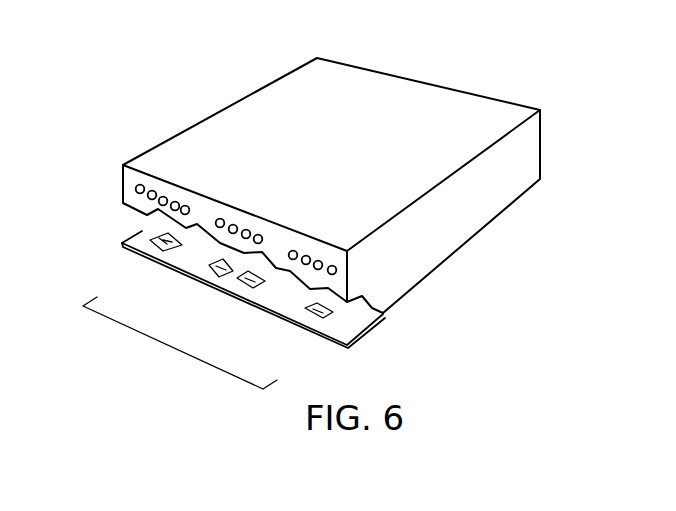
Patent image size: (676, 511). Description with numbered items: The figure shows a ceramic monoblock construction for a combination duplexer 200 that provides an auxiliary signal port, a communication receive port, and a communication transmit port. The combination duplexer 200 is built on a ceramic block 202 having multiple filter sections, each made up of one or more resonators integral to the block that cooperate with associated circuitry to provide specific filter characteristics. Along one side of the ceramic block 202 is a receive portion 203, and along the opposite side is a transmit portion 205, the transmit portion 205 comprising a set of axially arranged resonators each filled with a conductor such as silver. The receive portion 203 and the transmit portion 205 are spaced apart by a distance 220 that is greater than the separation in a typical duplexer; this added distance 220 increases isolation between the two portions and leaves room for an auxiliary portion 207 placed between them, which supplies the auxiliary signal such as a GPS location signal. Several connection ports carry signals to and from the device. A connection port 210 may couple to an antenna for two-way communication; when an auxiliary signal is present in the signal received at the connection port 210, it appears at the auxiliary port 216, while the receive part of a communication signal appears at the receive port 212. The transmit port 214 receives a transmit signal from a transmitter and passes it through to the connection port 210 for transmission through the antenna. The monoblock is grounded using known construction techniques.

The combination duplexer 200 is at (165, 68).
The ceramic block 202 is at (272, 105).
The transmit portion 205 is at (198, 187).
The auxiliary portion 207 is at (272, 212).
The receive portion 203 is at (348, 242).
The distance 220 is at (148, 337).
The transmit port 214 is at (138, 231).
The connection port 210 is at (209, 262).
The auxiliary port 216 is at (237, 280).
The receive port 212 is at (307, 307).